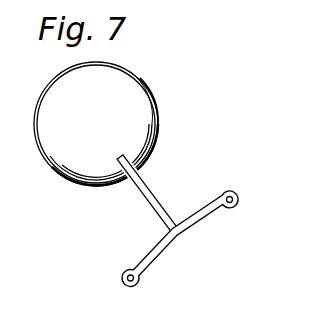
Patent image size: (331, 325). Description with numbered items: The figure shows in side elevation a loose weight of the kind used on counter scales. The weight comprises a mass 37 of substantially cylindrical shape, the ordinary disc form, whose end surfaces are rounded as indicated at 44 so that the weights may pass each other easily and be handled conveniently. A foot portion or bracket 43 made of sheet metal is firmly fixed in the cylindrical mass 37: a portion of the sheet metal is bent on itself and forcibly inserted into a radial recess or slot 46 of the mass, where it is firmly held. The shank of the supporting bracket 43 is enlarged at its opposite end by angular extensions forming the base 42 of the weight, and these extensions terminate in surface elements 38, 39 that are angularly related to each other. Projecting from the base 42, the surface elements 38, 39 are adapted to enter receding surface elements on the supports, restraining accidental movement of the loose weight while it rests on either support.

The disc 37 is at (156, 112).
The rounded end surface 44 is at (127, 127).
The radial recess or slot 46 is at (150, 155).
The foot portion or bracket 43 is at (150, 209).
The base 42 is at (186, 229).
The surface element 39 is at (238, 196).
The surface element 38 is at (123, 274).